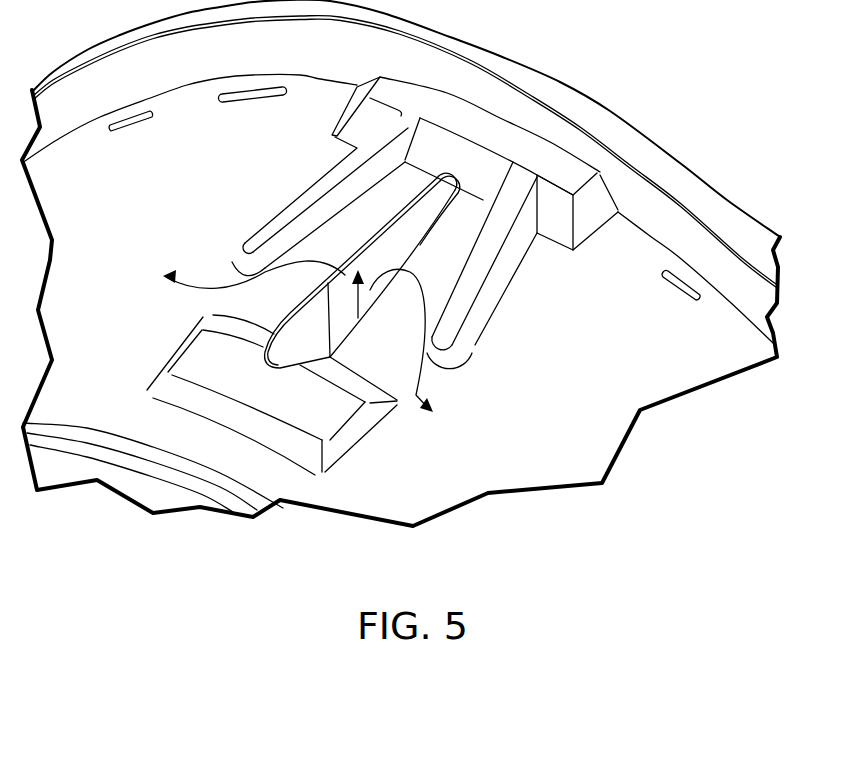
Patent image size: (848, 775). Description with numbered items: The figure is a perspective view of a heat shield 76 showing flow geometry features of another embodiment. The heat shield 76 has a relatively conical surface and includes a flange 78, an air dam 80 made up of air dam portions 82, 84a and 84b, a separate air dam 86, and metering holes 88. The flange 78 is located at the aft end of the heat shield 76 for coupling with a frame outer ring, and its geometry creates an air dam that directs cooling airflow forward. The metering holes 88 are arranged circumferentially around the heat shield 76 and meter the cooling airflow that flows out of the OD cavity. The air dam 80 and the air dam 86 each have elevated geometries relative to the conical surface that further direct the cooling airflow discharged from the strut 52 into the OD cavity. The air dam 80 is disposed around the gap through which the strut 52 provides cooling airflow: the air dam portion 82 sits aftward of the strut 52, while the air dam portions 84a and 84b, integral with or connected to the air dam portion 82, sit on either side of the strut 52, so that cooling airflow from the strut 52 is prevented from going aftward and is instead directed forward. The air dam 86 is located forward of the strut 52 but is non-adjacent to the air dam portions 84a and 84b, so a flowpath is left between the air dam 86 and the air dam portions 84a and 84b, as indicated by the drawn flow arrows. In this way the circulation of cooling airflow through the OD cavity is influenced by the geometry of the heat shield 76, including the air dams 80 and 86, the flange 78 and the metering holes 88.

The strut 52 is at (414, 246).
The heat shield 76 is at (618, 250).
The flange 78 is at (683, 220).
The air dam 80 is at (503, 293).
The air dam portion 82 is at (477, 128).
The air dam portion 84a is at (316, 192).
The air dam portion 84b is at (487, 260).
The air dam 86 is at (357, 435).
The metering holes 88 is at (130, 129).